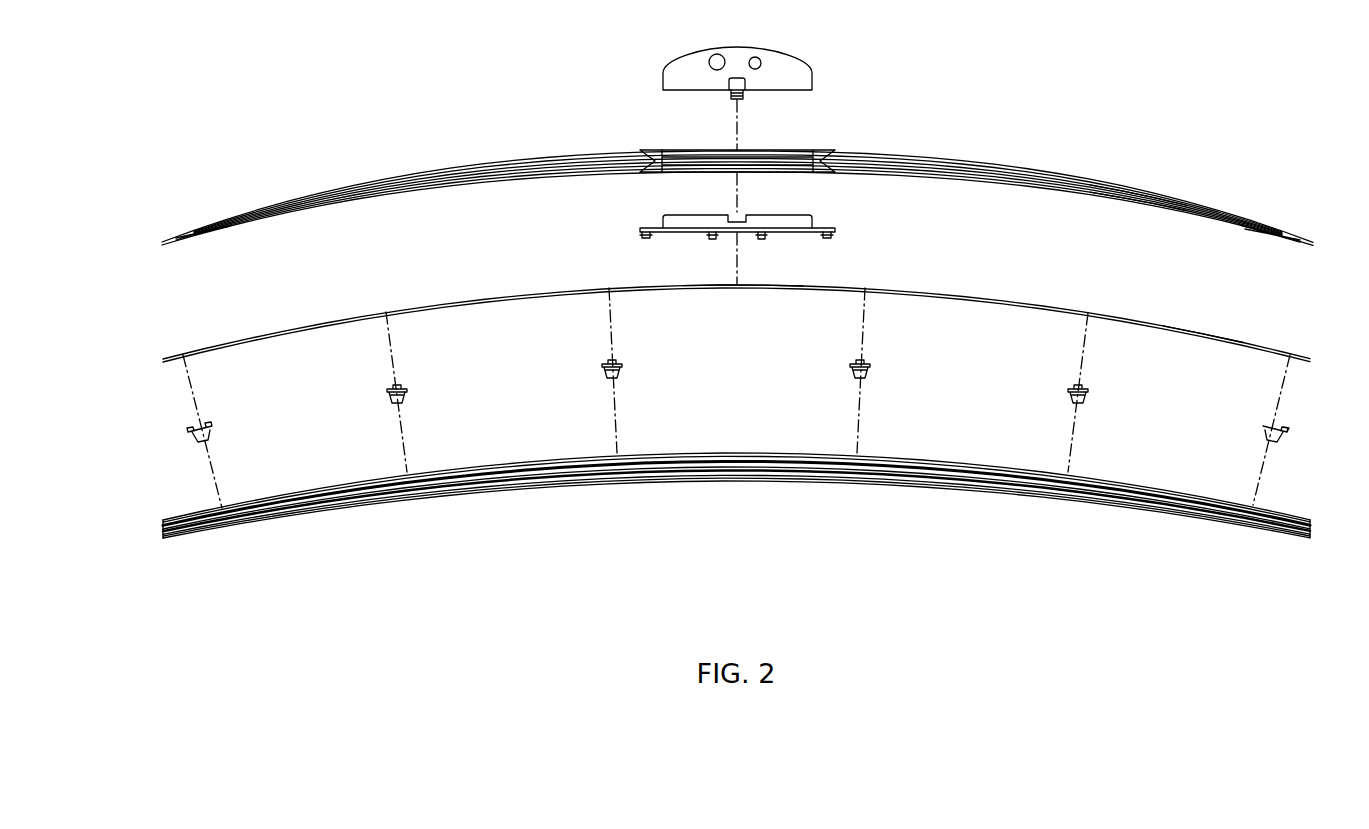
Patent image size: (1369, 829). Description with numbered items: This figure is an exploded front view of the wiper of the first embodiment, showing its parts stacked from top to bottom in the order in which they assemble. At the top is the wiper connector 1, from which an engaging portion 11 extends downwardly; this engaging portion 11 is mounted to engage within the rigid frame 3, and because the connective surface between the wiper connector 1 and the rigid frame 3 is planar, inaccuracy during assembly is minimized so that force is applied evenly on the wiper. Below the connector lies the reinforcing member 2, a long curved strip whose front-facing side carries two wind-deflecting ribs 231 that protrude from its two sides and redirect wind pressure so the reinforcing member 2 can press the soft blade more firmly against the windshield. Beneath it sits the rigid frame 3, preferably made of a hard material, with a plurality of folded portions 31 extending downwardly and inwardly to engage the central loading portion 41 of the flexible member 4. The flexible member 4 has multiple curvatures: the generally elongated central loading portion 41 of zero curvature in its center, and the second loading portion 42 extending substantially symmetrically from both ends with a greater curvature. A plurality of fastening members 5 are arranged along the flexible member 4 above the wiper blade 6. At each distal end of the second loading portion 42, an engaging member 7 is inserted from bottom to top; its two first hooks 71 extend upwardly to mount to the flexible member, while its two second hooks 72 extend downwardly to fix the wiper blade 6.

The wiper connector 1 is at (812, 50).
The engaging portion 11 is at (742, 99).
The reinforcing member 2 is at (1013, 163).
The wind-deflecting ribs 231 is at (1144, 192).
The rigid frame 3 is at (640, 228).
The folded portions 31 is at (648, 236).
The flexible member 4 is at (1030, 300).
The central loading portion 41 is at (758, 289).
The second loading portion 42 is at (1207, 330).
The fastening member 5 is at (390, 392).
The wiper blade 6 is at (685, 482).
The engaging member 7 is at (737, 429).
The first hooks 71 is at (210, 428).
The second hooks 72 is at (195, 438).